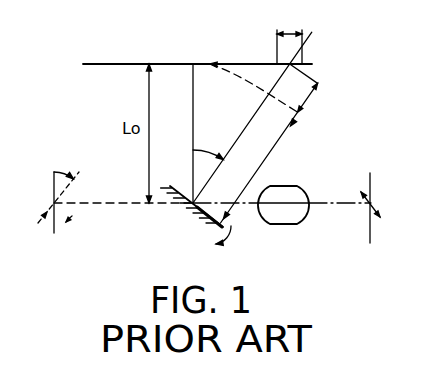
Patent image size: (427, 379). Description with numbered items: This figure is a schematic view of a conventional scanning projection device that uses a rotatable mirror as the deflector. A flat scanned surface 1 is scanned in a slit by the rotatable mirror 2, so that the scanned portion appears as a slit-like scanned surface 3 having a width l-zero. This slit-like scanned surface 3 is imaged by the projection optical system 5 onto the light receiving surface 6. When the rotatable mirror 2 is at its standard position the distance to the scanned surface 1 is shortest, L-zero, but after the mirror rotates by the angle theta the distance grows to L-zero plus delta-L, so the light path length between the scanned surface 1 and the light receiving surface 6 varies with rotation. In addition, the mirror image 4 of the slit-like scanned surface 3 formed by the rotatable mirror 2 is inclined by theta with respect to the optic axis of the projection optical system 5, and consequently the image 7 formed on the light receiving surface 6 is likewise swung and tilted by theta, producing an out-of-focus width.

The flat scanned surface 1 is at (151, 64).
The rotatable mirror 2 is at (201, 219).
The slit-like scanned surface 3 is at (259, 118).
The mirror image 4 is at (60, 204).
The projection optical system 5 is at (283, 225).
The light receiving surface 6 is at (366, 228).
The image of the slit-like scanned surface 7 is at (383, 213).